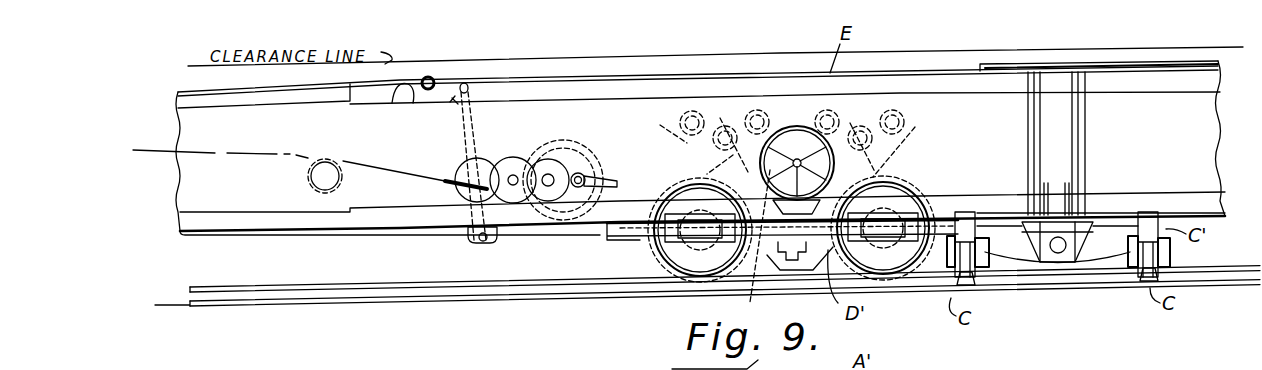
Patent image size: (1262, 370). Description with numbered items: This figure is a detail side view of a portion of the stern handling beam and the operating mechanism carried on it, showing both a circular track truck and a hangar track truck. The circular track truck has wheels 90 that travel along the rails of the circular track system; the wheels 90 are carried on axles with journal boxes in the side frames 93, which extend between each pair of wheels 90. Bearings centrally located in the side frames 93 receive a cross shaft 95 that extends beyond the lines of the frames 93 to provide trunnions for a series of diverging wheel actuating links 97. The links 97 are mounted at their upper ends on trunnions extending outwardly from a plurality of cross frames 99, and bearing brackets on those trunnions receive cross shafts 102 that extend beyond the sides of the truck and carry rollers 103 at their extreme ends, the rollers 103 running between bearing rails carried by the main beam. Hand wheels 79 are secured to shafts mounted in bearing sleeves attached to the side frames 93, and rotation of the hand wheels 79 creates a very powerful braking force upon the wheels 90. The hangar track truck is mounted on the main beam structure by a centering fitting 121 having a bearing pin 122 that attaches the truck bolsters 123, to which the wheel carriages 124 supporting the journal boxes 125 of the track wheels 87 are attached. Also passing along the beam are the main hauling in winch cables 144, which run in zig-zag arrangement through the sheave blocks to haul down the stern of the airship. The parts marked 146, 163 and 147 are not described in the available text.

The main hauling in winch cables 144 is at (214, 160).
The shaft 146 is at (338, 152).
The rod 163 is at (470, 121).
The gear cluster 147 is at (585, 149).
The cross shafts 102 is at (744, 110).
The rollers 103 is at (678, 121).
The hand wheels 79 is at (788, 133).
The cross frames 99 is at (694, 146).
The wheel actuating links 97 is at (732, 168).
The side frames 93 is at (898, 145).
The wheels 90 is at (668, 258).
The cross shaft 95 is at (782, 243).
The wheel carriages 124 is at (966, 216).
The journal boxes 125 is at (1160, 249).
The centering fitting 121 is at (1073, 226).
The bearing pin 122 is at (1061, 253).
The truck bolsters 123 is at (1022, 252).
The track wheels 87 is at (967, 270).